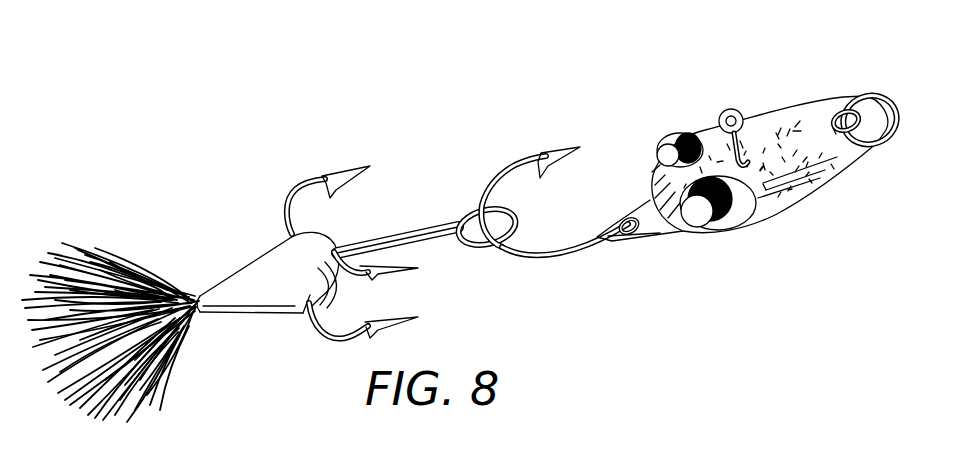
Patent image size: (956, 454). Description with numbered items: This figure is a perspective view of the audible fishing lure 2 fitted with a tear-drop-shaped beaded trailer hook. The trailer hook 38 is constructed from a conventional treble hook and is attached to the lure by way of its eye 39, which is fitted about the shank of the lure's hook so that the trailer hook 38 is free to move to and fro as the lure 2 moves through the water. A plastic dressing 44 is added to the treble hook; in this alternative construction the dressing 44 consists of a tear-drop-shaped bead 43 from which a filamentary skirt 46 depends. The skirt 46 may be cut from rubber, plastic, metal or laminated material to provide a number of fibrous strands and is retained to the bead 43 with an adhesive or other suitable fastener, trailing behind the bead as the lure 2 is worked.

The audible fishing lure 2 is at (777, 88).
The trailer hook 38 is at (298, 183).
The eye 39 is at (487, 245).
The tear drop shaped bead 43 is at (272, 318).
The dressing 44 is at (250, 252).
The filamentary skirt 46 is at (142, 402).